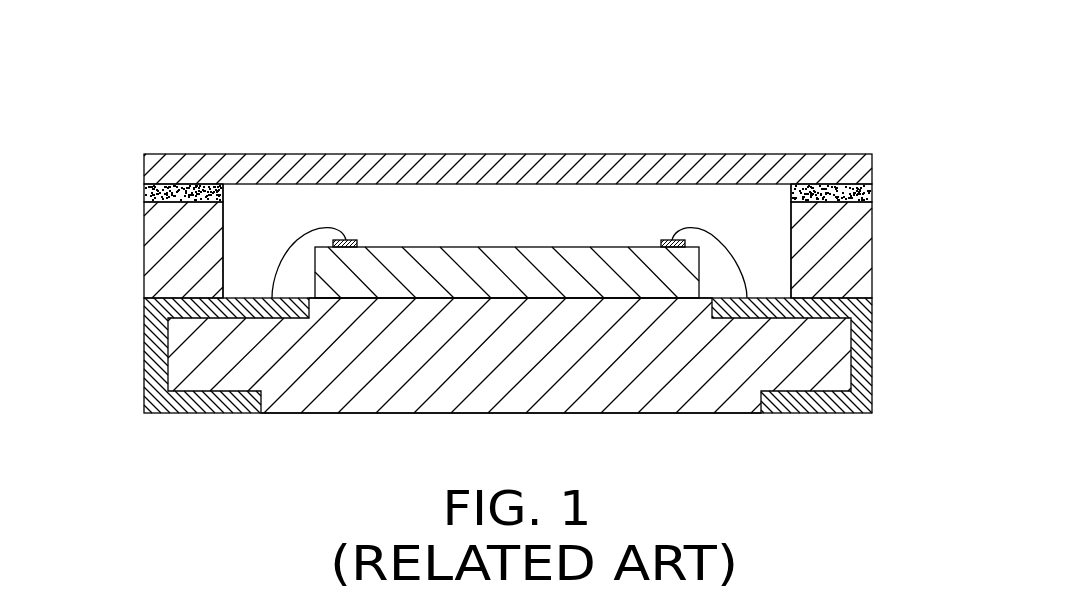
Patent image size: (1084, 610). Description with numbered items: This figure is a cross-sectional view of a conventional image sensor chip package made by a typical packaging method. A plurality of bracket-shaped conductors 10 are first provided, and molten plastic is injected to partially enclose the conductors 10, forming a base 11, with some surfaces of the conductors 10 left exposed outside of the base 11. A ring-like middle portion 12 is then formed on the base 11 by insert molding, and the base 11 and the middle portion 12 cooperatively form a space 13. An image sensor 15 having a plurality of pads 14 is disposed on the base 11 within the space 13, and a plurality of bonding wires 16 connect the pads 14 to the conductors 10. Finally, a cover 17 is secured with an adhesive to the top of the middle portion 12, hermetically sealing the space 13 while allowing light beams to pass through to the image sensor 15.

The bracket-shaped conductor 10 is at (147, 358).
The base 11 is at (618, 380).
The middle portion 12 is at (170, 253).
The space 13 is at (292, 203).
The pad 14 is at (668, 238).
The image sensor 15 is at (418, 283).
The bonding wire 16 is at (738, 256).
The cover 17 is at (545, 172).